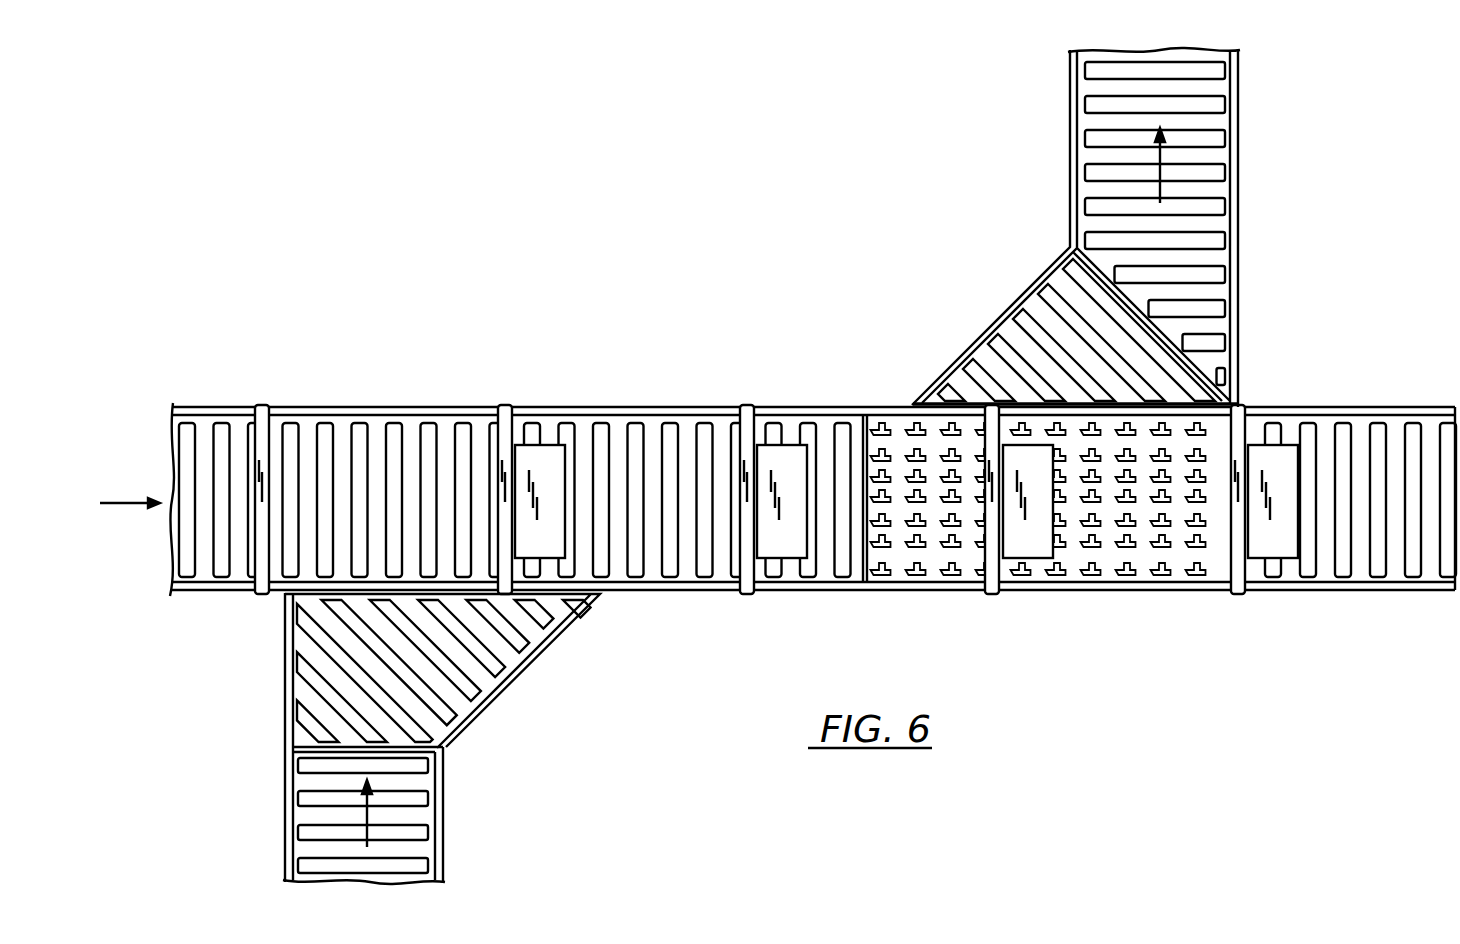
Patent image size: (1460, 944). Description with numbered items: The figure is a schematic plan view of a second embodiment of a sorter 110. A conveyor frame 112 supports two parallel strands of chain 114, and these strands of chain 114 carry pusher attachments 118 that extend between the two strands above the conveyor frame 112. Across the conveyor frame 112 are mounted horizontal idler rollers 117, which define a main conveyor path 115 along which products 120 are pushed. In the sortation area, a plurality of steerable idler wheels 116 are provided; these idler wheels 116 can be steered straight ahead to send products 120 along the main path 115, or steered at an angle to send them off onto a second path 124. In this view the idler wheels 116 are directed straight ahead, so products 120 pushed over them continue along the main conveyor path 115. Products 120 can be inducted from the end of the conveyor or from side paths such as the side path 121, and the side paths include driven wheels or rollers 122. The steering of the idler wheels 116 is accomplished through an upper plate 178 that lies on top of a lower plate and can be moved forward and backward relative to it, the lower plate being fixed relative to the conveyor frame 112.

The sorter 110 is at (864, 255).
The conveyor frame 112 is at (634, 398).
The strands of chain 114 is at (690, 408).
The main conveyor path 115 is at (150, 464).
The steerable idler wheels 116 is at (910, 425).
The horizontal idler rollers 117 is at (705, 576).
The pusher attachments 118 is at (263, 406).
The products 120 is at (547, 452).
The side path 121 is at (441, 802).
The skewed rollers 122 is at (1102, 170).
The second path 124 is at (1240, 182).
The upper plate 178 is at (1215, 567).